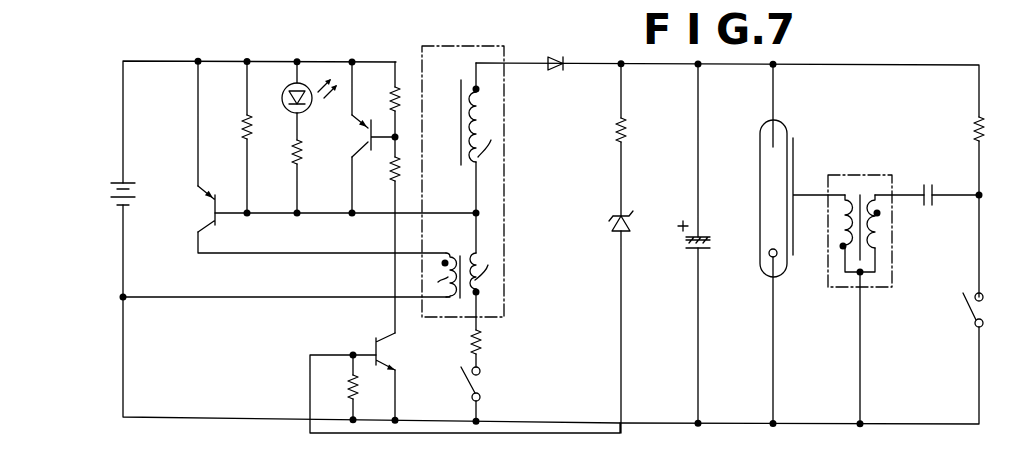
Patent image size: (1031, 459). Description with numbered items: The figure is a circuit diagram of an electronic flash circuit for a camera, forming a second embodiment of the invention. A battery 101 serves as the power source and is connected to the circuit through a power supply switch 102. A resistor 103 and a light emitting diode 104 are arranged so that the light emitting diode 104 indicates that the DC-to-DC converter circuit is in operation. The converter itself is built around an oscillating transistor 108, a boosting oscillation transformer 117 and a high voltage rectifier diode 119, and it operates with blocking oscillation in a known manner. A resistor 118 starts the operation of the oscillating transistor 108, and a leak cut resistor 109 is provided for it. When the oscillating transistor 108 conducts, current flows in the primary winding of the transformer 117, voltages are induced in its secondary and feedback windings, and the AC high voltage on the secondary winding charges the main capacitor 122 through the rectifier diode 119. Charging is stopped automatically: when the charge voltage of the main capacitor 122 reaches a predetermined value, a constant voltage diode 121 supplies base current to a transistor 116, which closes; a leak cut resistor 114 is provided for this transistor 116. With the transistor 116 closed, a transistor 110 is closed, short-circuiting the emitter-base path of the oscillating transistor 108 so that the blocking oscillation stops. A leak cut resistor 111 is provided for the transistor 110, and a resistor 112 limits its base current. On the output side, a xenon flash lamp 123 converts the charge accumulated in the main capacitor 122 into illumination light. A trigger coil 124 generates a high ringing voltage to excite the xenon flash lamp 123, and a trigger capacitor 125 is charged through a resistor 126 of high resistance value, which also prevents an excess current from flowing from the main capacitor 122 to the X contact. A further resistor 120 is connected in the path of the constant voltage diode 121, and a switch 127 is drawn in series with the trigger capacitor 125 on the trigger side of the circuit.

The battery 101 is at (112, 197).
The power supply switch 102 is at (482, 387).
The resistor 103 is at (297, 163).
The light emitting diode 104 is at (312, 99).
The oscillating transistor 108 is at (200, 209).
The leak cut resistor 109 is at (247, 117).
The transistor 110 is at (356, 141).
The leak cut resistor 111 is at (390, 105).
The resistor 112 is at (394, 176).
The leak cut resistor 114 is at (352, 378).
The transistor 116 is at (398, 358).
The boosting oscillation transformer 117 is at (485, 47).
The resistor 118 is at (486, 335).
The high voltage rectifier diode 119 is at (560, 55).
The resistor 120 is at (617, 120).
The constant voltage diode 121 is at (612, 216).
The main capacitor 122 is at (686, 244).
The xenon flash lamp 123 is at (760, 172).
The trigger coil 124 is at (840, 175).
The trigger capacitor 125 is at (928, 185).
The resistor 126 is at (987, 132).
The trigger switch 127 is at (985, 307).